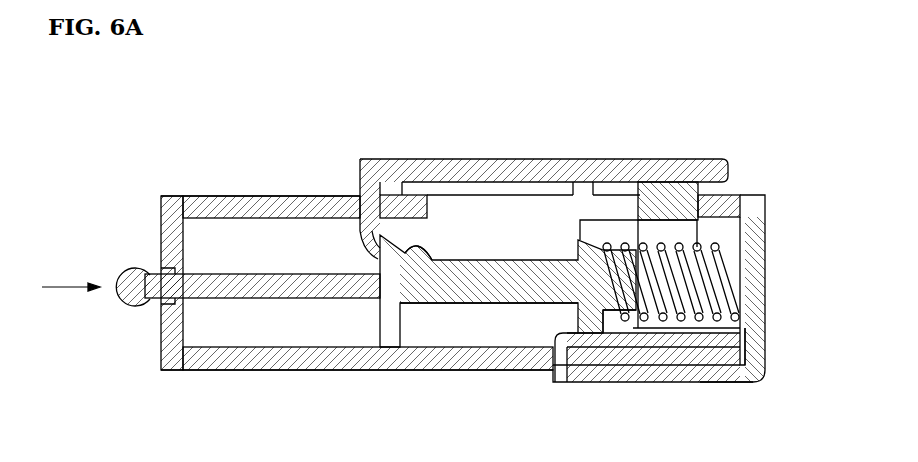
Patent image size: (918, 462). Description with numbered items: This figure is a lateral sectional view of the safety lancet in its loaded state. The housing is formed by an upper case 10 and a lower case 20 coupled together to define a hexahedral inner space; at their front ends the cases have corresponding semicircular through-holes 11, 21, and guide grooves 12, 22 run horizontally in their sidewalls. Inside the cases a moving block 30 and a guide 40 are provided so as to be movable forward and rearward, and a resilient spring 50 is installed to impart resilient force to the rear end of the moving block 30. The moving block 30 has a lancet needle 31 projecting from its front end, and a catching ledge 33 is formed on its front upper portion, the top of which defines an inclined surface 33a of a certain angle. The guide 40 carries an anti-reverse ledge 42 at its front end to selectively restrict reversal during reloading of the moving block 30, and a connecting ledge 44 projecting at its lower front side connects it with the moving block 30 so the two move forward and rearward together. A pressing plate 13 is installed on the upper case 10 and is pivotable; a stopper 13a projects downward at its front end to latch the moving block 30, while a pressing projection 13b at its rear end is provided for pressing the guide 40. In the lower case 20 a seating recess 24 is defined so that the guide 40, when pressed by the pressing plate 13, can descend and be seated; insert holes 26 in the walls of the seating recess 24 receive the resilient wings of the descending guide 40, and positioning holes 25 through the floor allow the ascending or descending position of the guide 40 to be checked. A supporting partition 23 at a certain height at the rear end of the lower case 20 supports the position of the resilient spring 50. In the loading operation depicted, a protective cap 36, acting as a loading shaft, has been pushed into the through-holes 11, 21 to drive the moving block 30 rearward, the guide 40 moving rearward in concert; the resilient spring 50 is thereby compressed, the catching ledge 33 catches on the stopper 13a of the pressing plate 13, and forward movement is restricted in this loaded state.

The upper case 10 is at (755, 236).
The semicircular through-hole 11 is at (158, 268).
The guide groove 12 is at (238, 268).
The pressing plate 13 is at (453, 164).
The stopper 13a is at (382, 228).
The pressing projection 13b is at (662, 195).
The lower case 20 is at (755, 333).
The semicircular through-hole 21 is at (165, 307).
The guide groove 22 is at (227, 298).
The supporting partition 23 is at (726, 352).
The seating recess 24 is at (608, 353).
The positioning hole 25 is at (752, 388).
The insert hole 26 is at (670, 350).
The moving block 30 is at (490, 292).
The lancet needle 31 is at (372, 293).
The catching ledge 33 is at (374, 259).
The inclined surface 33a is at (424, 263).
The protective cap 36 is at (122, 303).
The guide 40 is at (677, 230).
The anti-reverse ledge 42 is at (594, 232).
The connecting ledge 44 is at (556, 335).
The resilient spring 50 is at (713, 247).